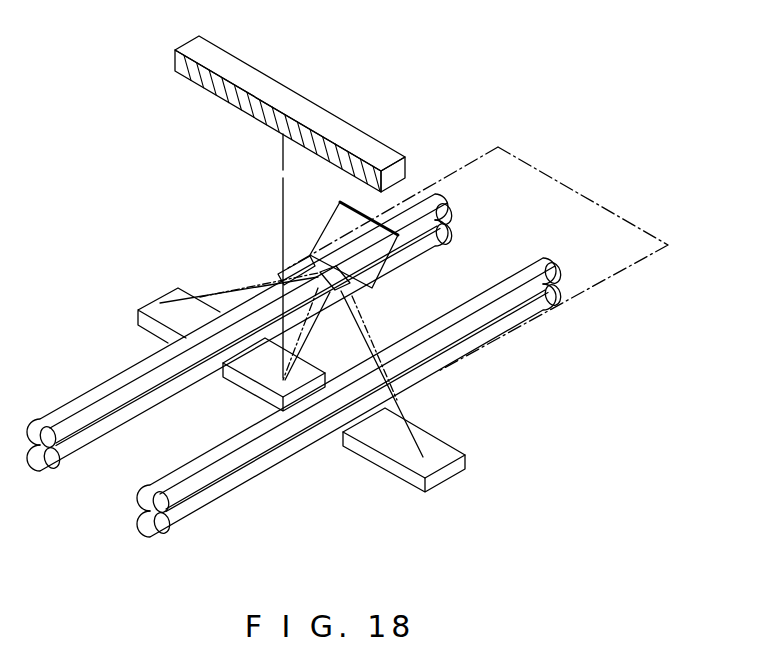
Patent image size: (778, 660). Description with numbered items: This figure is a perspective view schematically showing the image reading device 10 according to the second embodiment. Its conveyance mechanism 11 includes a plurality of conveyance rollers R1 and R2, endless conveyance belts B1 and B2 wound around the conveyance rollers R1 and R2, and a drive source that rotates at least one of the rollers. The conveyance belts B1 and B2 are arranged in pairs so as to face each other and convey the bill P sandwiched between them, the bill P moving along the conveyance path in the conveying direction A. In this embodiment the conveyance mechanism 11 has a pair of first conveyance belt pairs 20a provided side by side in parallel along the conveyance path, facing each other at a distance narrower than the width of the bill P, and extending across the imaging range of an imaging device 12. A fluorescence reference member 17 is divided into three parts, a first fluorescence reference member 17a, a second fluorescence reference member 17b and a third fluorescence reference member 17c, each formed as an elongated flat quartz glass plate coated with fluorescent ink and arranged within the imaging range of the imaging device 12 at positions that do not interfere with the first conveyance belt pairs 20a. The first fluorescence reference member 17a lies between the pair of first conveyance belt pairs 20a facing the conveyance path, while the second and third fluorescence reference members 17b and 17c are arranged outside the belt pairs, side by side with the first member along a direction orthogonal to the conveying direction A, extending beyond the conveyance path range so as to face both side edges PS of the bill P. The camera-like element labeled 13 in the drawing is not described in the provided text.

The image reading device 10 is at (453, 79).
The conveyance mechanism 11 is at (96, 349).
The imaging device 12 is at (237, 66).
The camera 13 is at (378, 270).
The fluorescence reference member 17 is at (326, 397).
The first fluorescence reference member 17a is at (250, 388).
The second fluorescence reference member 17b is at (442, 448).
The third fluorescence reference member 17c is at (178, 288).
The first conveyance belt pair 20a is at (137, 415).
The conveying direction A is at (327, 339).
The conveyance belt B1 is at (68, 412).
The conveyance belt B2 is at (92, 442).
The bill P is at (533, 172).
The side edge PS is at (447, 177).
The conveyance roller R1 is at (456, 230).
The conveyance roller R2 is at (58, 468).